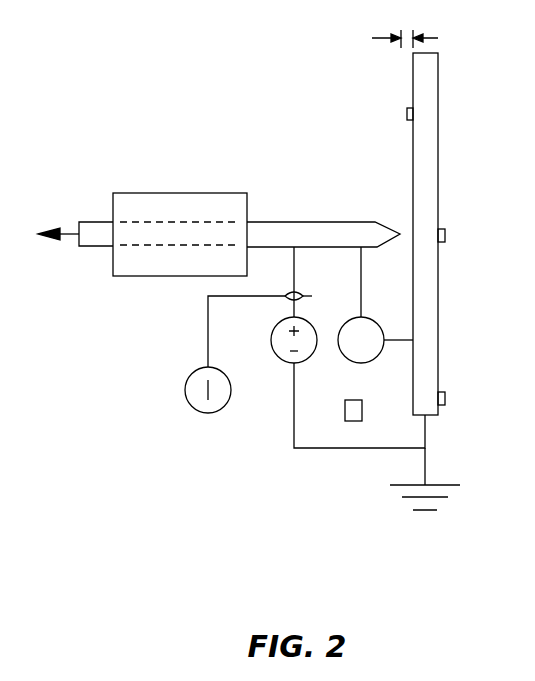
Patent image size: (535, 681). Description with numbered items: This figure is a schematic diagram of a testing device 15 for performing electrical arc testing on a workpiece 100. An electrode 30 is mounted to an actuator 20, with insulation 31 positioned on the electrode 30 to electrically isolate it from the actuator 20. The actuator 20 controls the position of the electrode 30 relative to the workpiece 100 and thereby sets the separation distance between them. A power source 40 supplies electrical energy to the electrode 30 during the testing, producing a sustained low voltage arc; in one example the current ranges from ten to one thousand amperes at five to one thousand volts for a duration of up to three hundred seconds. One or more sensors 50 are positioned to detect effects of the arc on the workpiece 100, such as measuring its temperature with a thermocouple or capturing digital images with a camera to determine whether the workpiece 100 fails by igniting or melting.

The testing device 15 is at (125, 95).
The actuator 20 is at (203, 208).
The electrode 30 is at (325, 228).
The insulation 31 is at (97, 235).
The power source 40 is at (282, 360).
The sensor 50 is at (408, 110).
The workpiece 100 is at (427, 67).